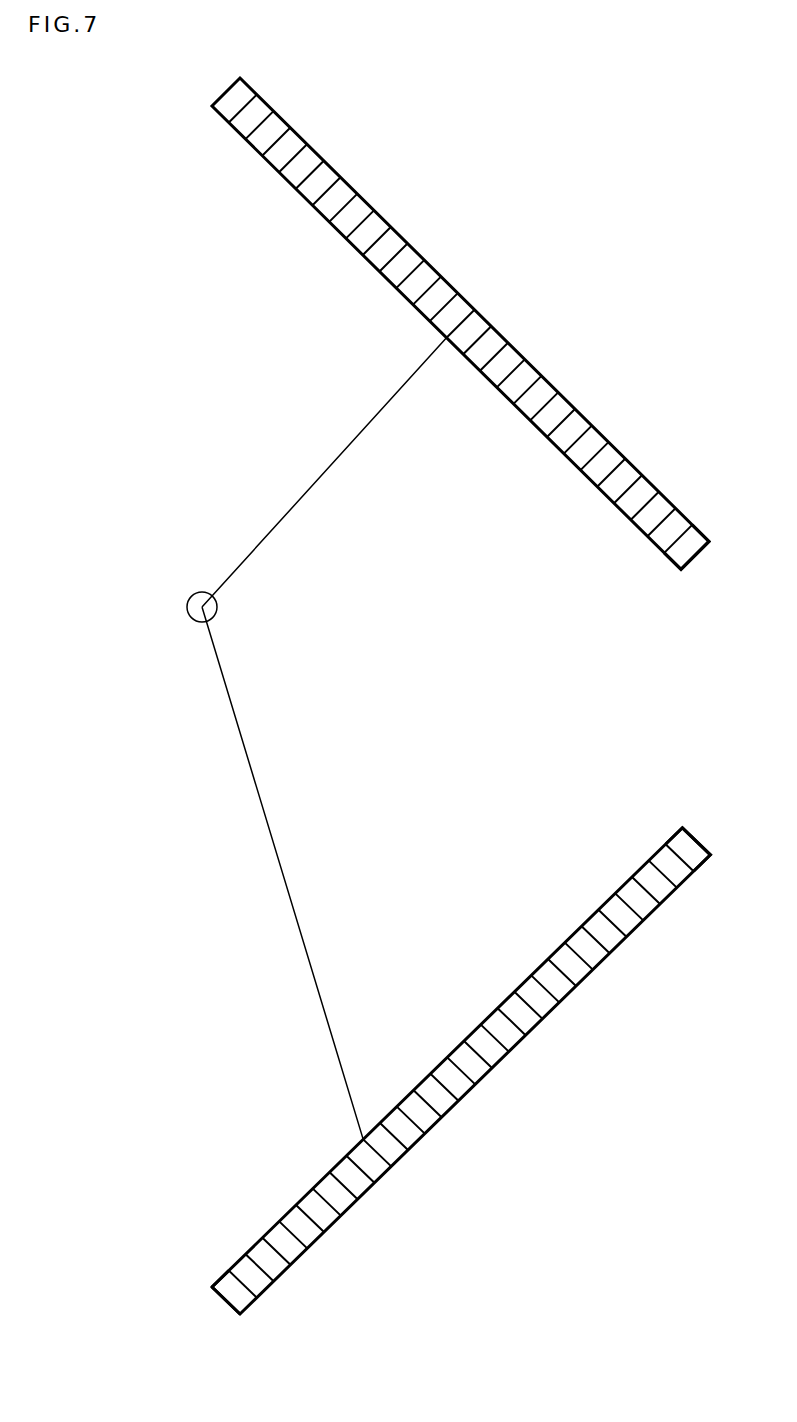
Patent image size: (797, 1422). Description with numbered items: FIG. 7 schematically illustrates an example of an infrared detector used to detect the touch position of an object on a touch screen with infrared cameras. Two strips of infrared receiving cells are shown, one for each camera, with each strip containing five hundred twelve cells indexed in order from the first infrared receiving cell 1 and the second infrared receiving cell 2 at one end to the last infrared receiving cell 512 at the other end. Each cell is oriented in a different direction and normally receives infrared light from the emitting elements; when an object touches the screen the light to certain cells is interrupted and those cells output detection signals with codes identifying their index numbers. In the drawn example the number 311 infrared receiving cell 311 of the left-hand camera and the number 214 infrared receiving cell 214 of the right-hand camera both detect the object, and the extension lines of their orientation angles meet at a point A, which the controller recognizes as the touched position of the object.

The infrared receiving cell 1 is at (225, 705).
The infrared receiving cell 2 is at (243, 696).
The infrared receiving cell 311 is at (450, 335).
The infrared receiving cell 214 is at (355, 1155).
The infrared receiving cell 512 is at (684, 698).
The measurement point A is at (183, 607).